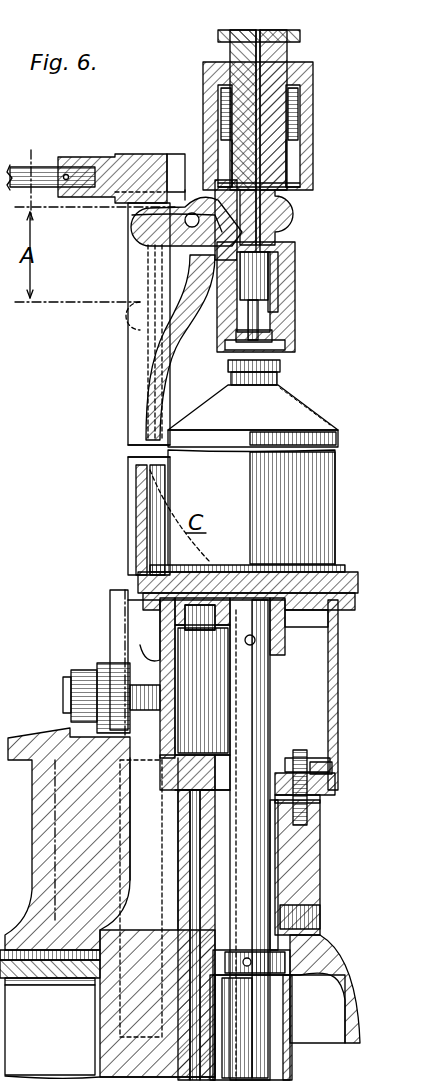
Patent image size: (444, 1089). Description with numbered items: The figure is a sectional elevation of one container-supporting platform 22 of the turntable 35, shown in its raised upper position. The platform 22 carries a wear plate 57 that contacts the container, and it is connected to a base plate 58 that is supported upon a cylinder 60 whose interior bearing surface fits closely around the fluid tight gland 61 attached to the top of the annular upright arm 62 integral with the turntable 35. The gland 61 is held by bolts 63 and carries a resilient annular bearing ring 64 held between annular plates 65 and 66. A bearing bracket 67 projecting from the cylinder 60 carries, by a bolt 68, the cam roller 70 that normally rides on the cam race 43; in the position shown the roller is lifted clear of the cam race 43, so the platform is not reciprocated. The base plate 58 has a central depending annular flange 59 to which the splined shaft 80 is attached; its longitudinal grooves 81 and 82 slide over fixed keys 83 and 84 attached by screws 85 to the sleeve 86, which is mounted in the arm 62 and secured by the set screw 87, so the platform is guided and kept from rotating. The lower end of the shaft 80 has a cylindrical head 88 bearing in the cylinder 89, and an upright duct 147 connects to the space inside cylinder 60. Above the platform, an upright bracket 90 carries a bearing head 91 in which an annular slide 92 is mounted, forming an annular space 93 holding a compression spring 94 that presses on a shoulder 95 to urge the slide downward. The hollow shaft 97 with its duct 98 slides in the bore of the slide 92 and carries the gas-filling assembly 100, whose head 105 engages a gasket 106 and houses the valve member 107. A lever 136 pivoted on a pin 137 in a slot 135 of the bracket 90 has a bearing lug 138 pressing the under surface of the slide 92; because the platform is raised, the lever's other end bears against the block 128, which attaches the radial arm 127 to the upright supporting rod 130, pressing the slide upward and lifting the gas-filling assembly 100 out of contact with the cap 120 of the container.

The hollow shaft 97 is at (270, 30).
The duct 98 is at (258, 50).
The annular slide 92 is at (284, 66).
The bearing head 91 is at (306, 86).
The annular space 93 is at (300, 110).
The compression spring 94 is at (296, 132).
The shoulder 95 is at (298, 152).
The radial arm 127 is at (44, 165).
The block 128 is at (146, 162).
The slot 135 is at (200, 190).
The bearing lug 138 is at (282, 212).
The lever 136 is at (142, 222).
The pin 137 is at (160, 243).
The upright supporting rod 130 is at (135, 272).
The upright bracket 90 is at (135, 410).
The gas-filling assembly 100 is at (305, 270).
The gasket 106 is at (285, 287).
The head 105 is at (295, 299).
The valve member 107 is at (262, 318).
The cap 120 is at (282, 368).
The wear plate 57 is at (348, 568).
The container-supporting platform 22 is at (358, 584).
The base plate 58 is at (356, 605).
The bearing bracket 67 is at (142, 640).
The cam roller 70 is at (98, 668).
The bolt 68 is at (64, 690).
The cam race 43 is at (68, 738).
The central depending annular flange 59 is at (280, 636).
The splined shaft 80 is at (262, 674).
The longitudinal groove 81 is at (265, 694).
The cylinder 60 is at (340, 668).
The longitudinal groove 82 is at (233, 694).
The bolt 63 is at (320, 762).
The resilient annular bearing ring 64 is at (338, 784).
The annular plate 65 is at (332, 762).
The fluid tight gland 61 is at (291, 746).
The annular plate 66 is at (328, 800).
The fixed key 83 is at (160, 815).
The screw 85 is at (205, 792).
The fixed key 84 is at (275, 824).
The annular upright arm 62 is at (318, 852).
The sleeve 86 is at (288, 884).
The set screw 87 is at (322, 915).
The turntable 35 is at (345, 957).
The cylindrical head 88 is at (251, 1015).
The cylinder 89 is at (285, 1030).
The upright duct 147 is at (195, 1064).